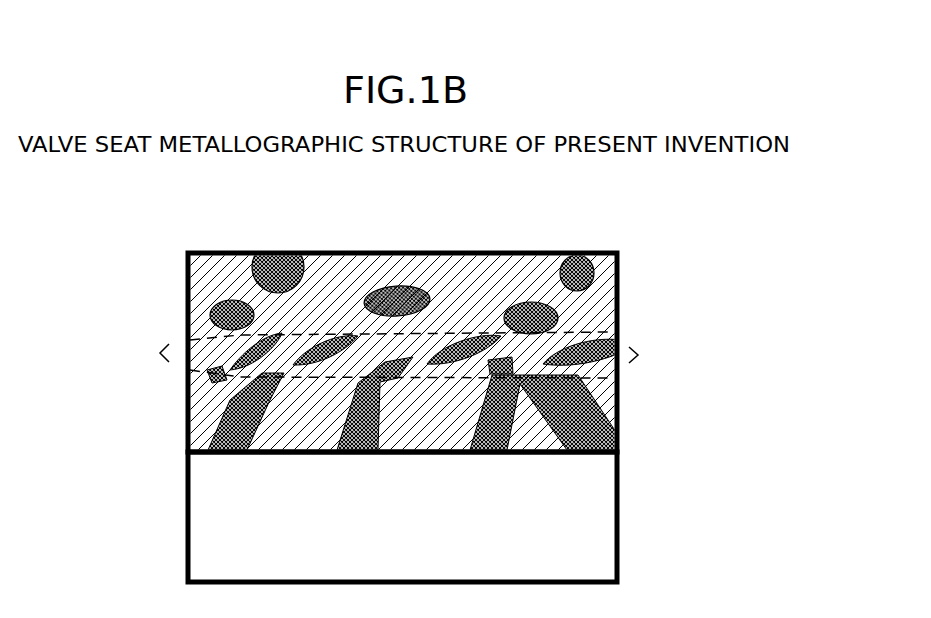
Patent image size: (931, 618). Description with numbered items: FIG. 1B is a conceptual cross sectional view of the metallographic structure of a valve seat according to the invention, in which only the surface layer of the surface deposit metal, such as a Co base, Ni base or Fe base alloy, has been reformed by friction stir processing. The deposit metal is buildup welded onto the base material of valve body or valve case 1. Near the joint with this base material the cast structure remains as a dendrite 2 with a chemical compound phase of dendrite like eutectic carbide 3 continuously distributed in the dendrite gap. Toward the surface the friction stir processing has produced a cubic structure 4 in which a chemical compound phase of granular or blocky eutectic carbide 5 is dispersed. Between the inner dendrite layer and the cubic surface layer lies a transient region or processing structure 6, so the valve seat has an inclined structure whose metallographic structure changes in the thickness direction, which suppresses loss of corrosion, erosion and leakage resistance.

The base material of valve body or valve case 1 is at (592, 510).
The dendrite 2 is at (189, 419).
The chemical compound phase of dendrite like eutectic carbide 3 is at (618, 415).
The cubic structure 4 is at (506, 275).
The chemical compound phase of granular or blocky eutectic carbide 5 is at (278, 270).
The transient region of inner layer and surface layer 6 is at (163, 348).